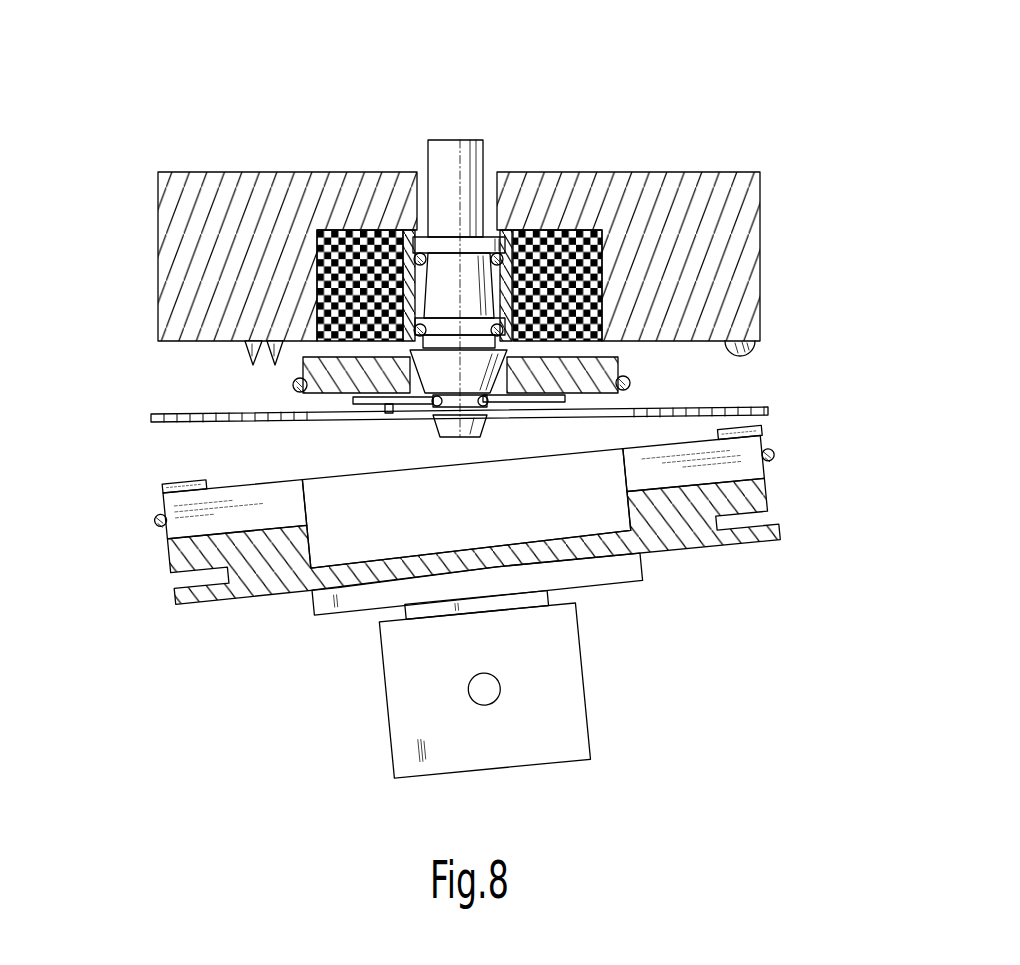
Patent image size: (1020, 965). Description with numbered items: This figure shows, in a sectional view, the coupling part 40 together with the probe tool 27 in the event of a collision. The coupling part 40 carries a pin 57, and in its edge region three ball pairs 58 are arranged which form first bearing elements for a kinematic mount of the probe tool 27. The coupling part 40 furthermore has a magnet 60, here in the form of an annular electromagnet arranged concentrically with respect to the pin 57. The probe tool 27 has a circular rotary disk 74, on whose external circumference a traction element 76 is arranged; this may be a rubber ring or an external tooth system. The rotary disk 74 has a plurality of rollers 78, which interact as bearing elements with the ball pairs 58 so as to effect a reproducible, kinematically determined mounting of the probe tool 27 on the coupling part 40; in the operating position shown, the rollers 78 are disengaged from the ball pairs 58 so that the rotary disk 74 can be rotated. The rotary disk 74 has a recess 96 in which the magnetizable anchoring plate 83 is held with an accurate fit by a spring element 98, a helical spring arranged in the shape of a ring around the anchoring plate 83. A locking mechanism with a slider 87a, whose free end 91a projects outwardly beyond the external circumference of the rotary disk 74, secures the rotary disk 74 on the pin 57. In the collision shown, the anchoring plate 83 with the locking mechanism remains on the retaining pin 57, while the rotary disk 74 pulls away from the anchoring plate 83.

The probe tool 27 is at (258, 716).
The coupling part 40 is at (672, 172).
The pin 57 is at (443, 140).
The ball pairs 58 is at (755, 353).
The magnet 60 is at (362, 230).
The rotary disk 74 is at (683, 535).
The traction element 76 is at (772, 457).
The rollers 78 is at (765, 429).
The anchoring plate 83 is at (617, 353).
The slider 87a is at (205, 413).
The free end 91a is at (151, 417).
The recess 96 is at (368, 500).
The spring element 98 is at (630, 390).